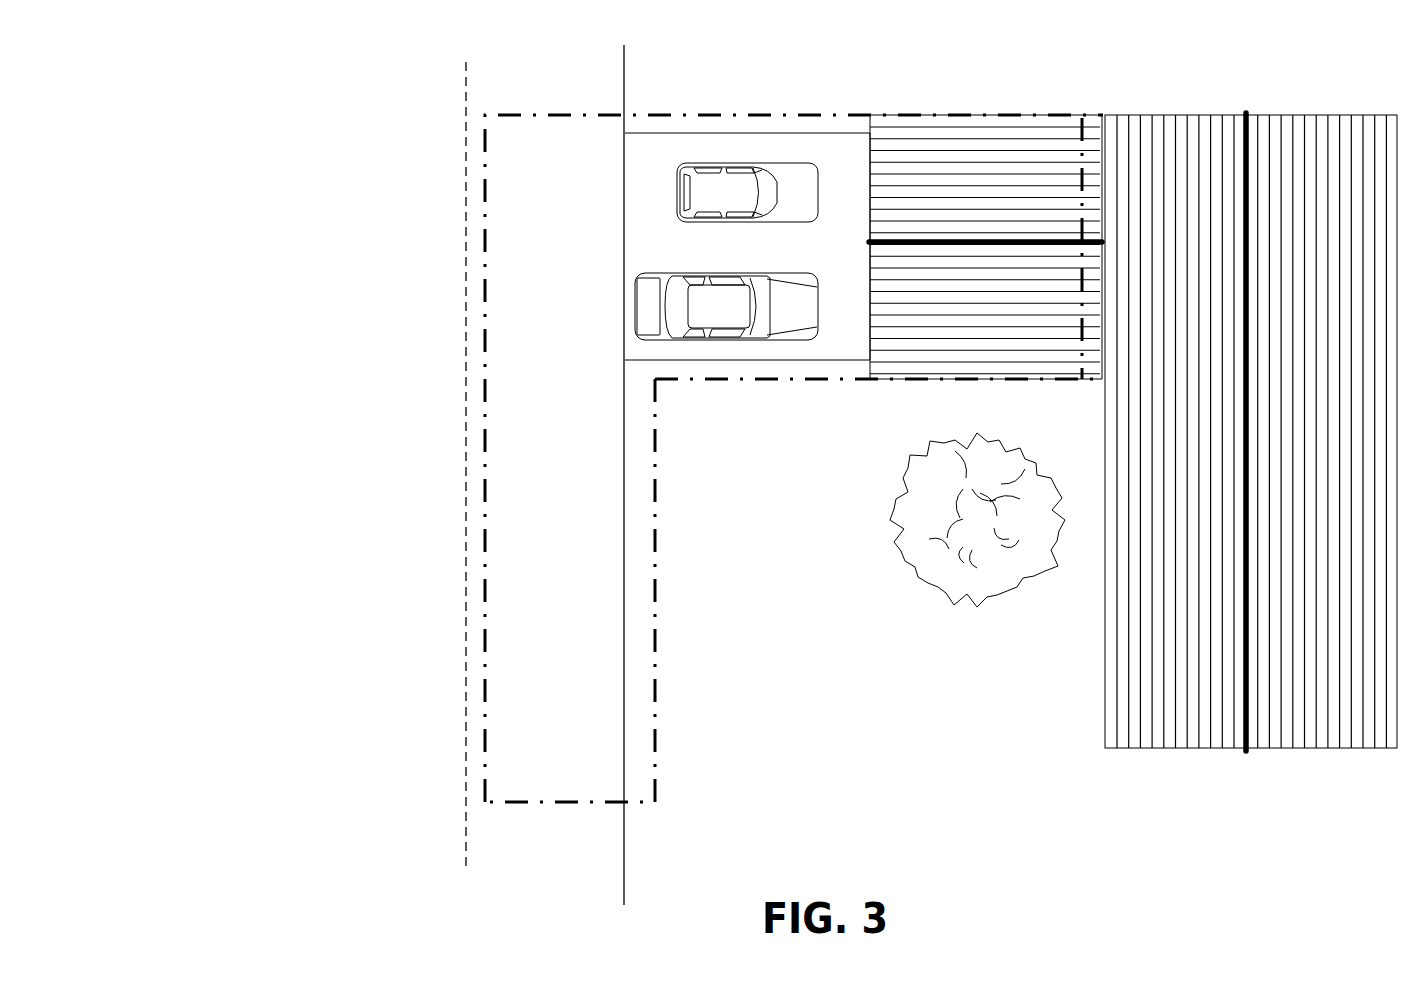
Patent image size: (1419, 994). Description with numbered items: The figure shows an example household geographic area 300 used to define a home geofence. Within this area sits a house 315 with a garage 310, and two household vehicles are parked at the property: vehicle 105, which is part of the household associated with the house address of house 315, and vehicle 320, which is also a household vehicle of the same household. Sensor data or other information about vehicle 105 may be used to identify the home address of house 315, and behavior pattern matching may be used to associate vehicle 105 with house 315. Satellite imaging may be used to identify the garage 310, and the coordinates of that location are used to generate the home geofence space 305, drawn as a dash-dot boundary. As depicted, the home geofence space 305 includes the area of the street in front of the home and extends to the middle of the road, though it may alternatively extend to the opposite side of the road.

The household geographic area 300 is at (210, 66).
The vehicle 105 is at (726, 306).
The vehicle 320 is at (747, 192).
The home geofence space 305 is at (710, 380).
The garage 310 is at (1093, 113).
The house 315 is at (1273, 748).